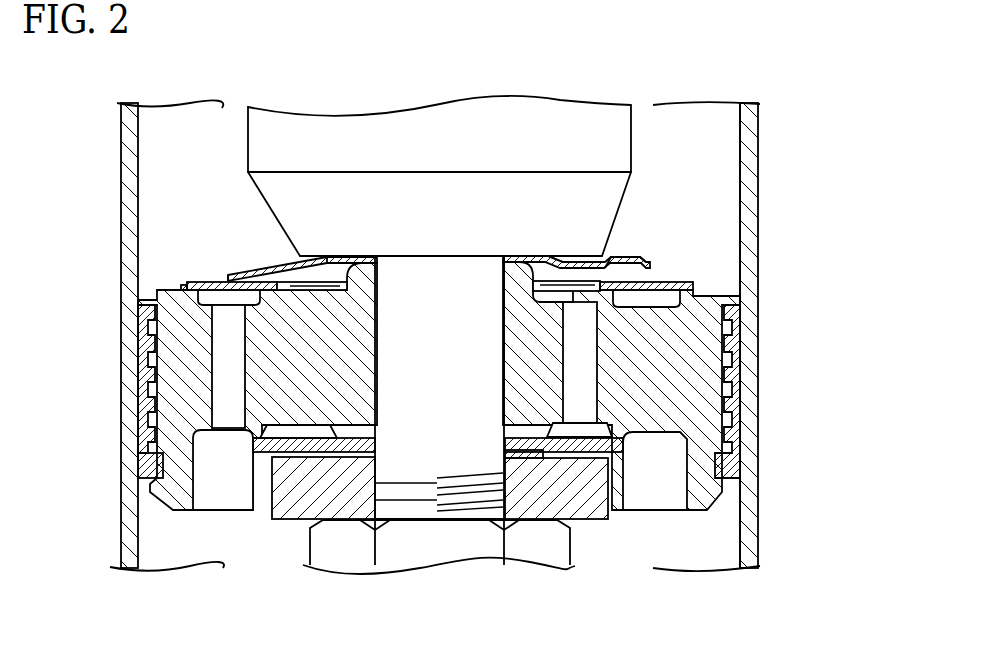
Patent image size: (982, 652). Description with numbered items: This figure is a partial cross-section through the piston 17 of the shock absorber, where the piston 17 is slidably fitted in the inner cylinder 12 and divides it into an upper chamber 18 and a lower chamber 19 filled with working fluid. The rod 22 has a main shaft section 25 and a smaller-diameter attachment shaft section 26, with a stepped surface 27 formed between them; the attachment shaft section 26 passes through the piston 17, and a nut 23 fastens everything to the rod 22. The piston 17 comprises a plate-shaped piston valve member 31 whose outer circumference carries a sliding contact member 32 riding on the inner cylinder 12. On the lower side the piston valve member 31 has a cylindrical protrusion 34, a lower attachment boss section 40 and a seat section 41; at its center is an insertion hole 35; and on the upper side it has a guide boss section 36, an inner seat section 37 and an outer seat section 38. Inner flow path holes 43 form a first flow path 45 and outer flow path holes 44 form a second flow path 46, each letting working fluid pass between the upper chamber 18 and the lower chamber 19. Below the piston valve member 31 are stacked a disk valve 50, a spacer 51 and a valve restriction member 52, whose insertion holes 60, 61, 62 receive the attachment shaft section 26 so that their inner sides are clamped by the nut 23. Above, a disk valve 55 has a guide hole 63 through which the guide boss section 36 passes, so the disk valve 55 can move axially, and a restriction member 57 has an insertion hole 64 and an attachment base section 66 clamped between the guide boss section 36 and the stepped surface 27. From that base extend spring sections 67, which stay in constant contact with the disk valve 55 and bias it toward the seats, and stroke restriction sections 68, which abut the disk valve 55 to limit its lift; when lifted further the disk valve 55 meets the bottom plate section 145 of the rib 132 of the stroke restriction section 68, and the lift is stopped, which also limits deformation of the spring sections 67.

The inner cylinder 12 is at (757, 190).
The piston 17 is at (747, 367).
The upper chamber 18 is at (182, 158).
The lower chamber 19 is at (173, 540).
The rod 22 is at (635, 143).
The nut 23 is at (530, 540).
The main shaft section 25 is at (442, 137).
The attachment shaft section 26 is at (427, 277).
The stepped surface 27 is at (443, 257).
The piston valve member 31 is at (200, 372).
The sliding contact member 32 is at (148, 340).
The cylindrical protrusion 34 is at (170, 494).
The insertion hole 35 is at (498, 322).
The guide boss section 36 is at (553, 265).
The inner seat section 37 is at (268, 285).
The outer seat section 38 is at (215, 288).
The lower attachment boss section 40 is at (355, 440).
The seat section 41 is at (262, 452).
The flow path holes 43 is at (590, 383).
The flow path holes 44 is at (217, 420).
The first flow path 45 is at (583, 410).
The second flow path 46 is at (222, 412).
The disk valve 50 is at (612, 452).
The spacer 51 is at (532, 458).
The valve restriction member 52 is at (580, 497).
The disk valve 55 is at (677, 282).
The restriction member 57 is at (655, 252).
The insertion hole 60 is at (375, 445).
The insertion hole 61 is at (375, 455).
The insertion hole 62 is at (375, 473).
The guide hole 63 is at (303, 258).
The insertion hole 64 is at (362, 310).
The attachment base section 66 is at (520, 258).
The spring sections 67 is at (228, 276).
The stroke restriction sections 68 is at (527, 275).
The rib 132 is at (583, 245).
The bottom plate section 145 is at (576, 245).